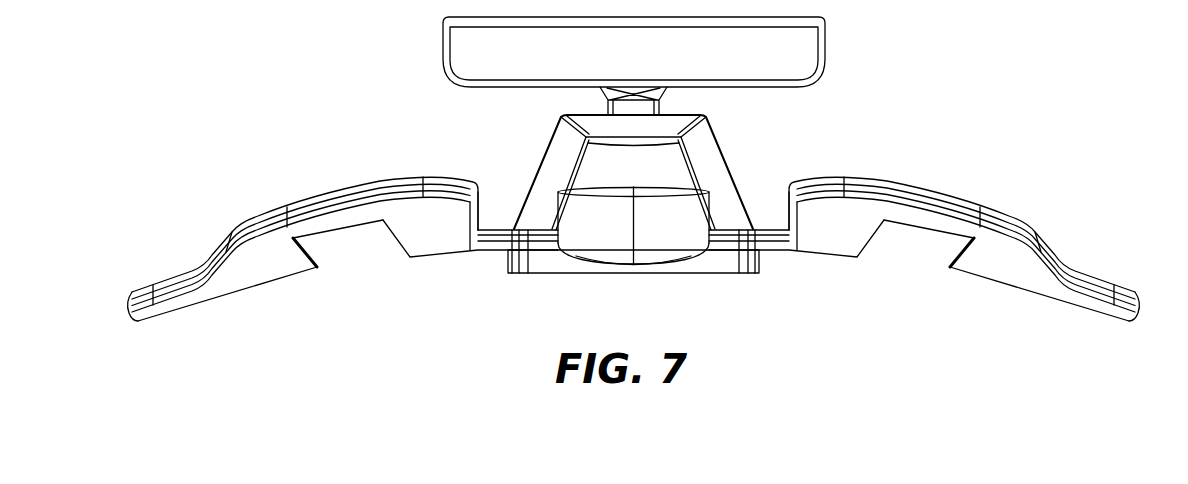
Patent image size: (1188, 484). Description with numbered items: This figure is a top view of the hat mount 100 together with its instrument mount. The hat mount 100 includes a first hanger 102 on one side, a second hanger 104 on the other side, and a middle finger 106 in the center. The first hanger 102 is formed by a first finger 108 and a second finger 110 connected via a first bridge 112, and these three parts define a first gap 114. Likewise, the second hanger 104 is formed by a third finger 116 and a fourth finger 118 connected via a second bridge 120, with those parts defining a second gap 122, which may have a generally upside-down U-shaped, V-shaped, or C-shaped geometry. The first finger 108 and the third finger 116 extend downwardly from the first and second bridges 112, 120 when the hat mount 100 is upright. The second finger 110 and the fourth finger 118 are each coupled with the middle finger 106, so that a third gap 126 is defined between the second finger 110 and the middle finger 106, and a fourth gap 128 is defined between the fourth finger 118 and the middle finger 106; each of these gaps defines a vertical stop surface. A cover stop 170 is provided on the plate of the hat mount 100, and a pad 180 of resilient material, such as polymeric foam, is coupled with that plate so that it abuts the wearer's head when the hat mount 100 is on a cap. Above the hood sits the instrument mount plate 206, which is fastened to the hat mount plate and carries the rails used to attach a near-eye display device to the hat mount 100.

The hat mount 100 is at (635, 190).
The first hanger 102 is at (334, 207).
The second hanger 104 is at (935, 208).
The middle finger 106 is at (665, 233).
The first finger 108 is at (213, 258).
The second finger 110 is at (428, 237).
The first bridge 112 is at (305, 186).
The first gap 114 is at (348, 262).
The third finger 116 is at (1055, 233).
The fourth finger 118 is at (847, 249).
The second bridge 120 is at (962, 183).
The second gap 122 is at (915, 268).
The third gap 126 is at (506, 196).
The fourth gap 128 is at (762, 200).
The cover stop 170 is at (693, 137).
The pad 180 is at (618, 302).
The instrument mount plate 206 is at (475, 63).